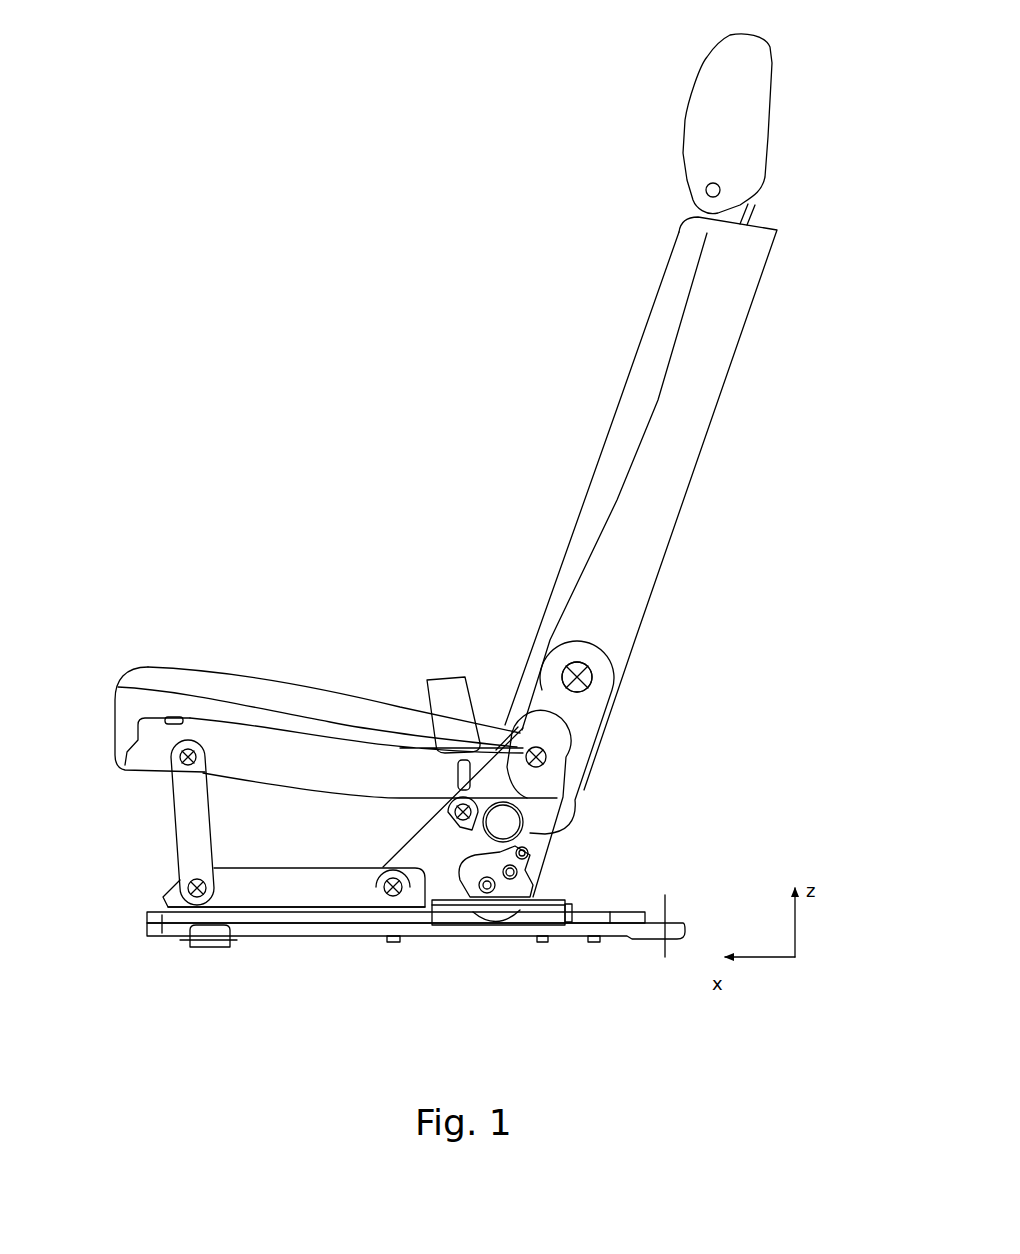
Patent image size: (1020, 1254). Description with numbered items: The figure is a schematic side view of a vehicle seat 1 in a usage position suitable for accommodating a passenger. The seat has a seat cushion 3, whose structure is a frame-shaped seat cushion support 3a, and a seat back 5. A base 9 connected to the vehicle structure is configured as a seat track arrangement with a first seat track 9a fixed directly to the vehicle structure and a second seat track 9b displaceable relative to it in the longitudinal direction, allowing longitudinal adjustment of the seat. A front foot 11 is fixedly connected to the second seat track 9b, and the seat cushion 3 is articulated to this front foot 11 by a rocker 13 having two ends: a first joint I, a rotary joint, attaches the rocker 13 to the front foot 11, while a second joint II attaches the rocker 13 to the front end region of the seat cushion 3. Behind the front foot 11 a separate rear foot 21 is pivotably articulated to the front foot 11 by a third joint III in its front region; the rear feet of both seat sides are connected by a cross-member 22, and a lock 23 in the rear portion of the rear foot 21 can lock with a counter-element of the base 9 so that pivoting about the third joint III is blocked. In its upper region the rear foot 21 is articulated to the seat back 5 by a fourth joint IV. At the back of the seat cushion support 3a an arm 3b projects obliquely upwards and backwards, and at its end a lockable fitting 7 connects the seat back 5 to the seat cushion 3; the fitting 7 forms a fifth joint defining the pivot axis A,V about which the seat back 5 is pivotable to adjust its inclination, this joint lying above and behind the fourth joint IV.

The vehicle seat 1 is at (330, 286).
The seat cushion 3 is at (208, 682).
The seat cushion support 3a is at (247, 732).
The arm 3b is at (588, 718).
The seat back 5 is at (638, 374).
The fitting 7 is at (590, 684).
The base 9 is at (124, 928).
The first seat track 9a is at (155, 933).
The second seat track 9b is at (165, 908).
The front foot 11 is at (265, 892).
The rocker 13 is at (185, 822).
The rear foot 21 is at (537, 865).
The cross-member 22 is at (523, 842).
The lock 23 is at (497, 917).
The first joint I is at (205, 883).
The second joint II is at (193, 748).
The third joint III is at (383, 897).
The fourth joint IV is at (548, 757).
The pivot axis and fifth joint A,V is at (592, 672).